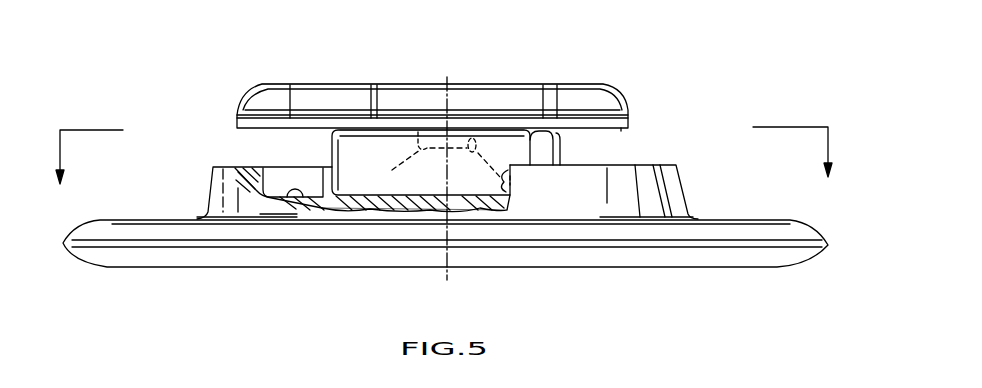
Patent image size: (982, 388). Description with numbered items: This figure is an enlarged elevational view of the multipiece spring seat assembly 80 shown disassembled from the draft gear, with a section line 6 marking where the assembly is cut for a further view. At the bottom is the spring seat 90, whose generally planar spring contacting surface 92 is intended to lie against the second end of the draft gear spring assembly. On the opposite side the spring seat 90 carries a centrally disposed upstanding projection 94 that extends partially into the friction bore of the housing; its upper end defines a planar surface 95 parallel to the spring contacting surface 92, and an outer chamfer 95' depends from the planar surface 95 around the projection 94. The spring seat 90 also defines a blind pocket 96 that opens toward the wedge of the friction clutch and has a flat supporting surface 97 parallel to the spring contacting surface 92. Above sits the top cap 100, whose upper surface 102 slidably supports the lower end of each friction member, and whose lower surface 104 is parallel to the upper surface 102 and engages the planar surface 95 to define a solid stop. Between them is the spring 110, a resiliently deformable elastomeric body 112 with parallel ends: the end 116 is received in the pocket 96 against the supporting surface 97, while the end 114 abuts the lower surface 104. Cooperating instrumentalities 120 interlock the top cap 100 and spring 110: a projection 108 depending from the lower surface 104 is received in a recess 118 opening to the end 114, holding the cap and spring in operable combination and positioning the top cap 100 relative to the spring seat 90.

The section line 6- 6 is at (443, 149).
The multipiece spring seat assembly 80 is at (695, 98).
The spring seat 90 is at (217, 236).
The spring contacting surface 92 is at (333, 268).
The upstanding projection 94 is at (672, 191).
The planar surface 95 is at (271, 174).
The chamfer 95' is at (247, 193).
The pocket 96 is at (291, 189).
The flat supporting surface 97 is at (320, 167).
The top cap 100 is at (306, 75).
The upper surface 102 is at (352, 83).
The lower surface 104 is at (622, 132).
The projection 108 is at (431, 162).
The spring 110 is at (490, 137).
The resiliently deformable body 112 is at (406, 183).
The spring end 114 is at (400, 128).
The spring end 116 is at (487, 199).
The recess 118 is at (520, 187).
The cooperating instrumentalities 120 is at (471, 156).